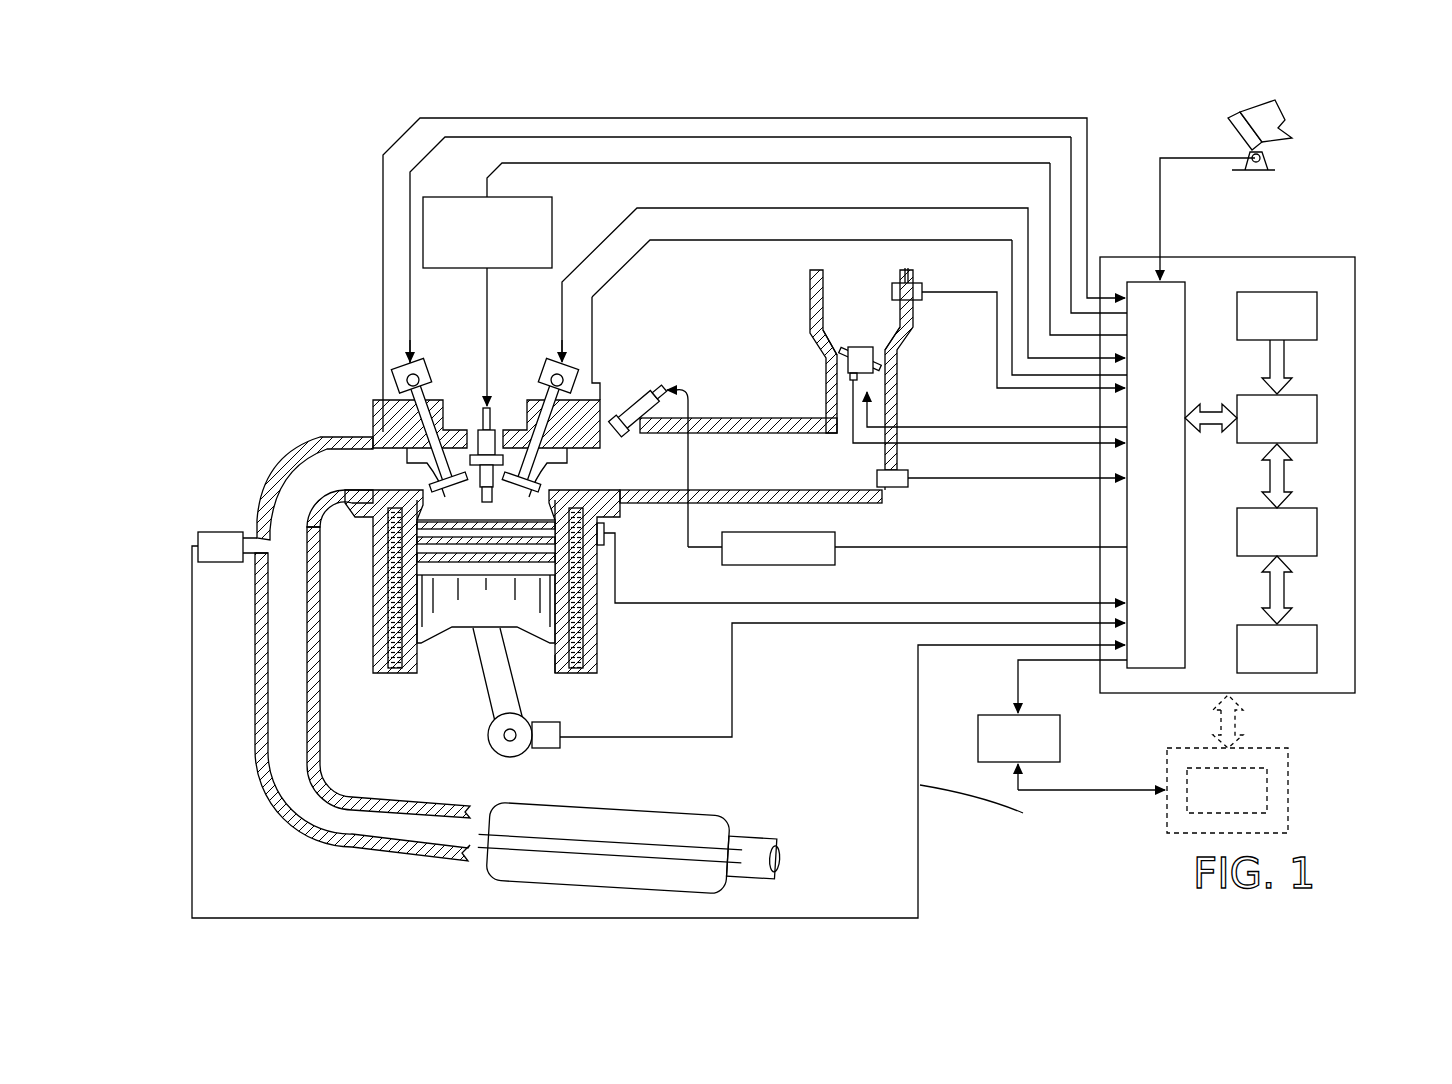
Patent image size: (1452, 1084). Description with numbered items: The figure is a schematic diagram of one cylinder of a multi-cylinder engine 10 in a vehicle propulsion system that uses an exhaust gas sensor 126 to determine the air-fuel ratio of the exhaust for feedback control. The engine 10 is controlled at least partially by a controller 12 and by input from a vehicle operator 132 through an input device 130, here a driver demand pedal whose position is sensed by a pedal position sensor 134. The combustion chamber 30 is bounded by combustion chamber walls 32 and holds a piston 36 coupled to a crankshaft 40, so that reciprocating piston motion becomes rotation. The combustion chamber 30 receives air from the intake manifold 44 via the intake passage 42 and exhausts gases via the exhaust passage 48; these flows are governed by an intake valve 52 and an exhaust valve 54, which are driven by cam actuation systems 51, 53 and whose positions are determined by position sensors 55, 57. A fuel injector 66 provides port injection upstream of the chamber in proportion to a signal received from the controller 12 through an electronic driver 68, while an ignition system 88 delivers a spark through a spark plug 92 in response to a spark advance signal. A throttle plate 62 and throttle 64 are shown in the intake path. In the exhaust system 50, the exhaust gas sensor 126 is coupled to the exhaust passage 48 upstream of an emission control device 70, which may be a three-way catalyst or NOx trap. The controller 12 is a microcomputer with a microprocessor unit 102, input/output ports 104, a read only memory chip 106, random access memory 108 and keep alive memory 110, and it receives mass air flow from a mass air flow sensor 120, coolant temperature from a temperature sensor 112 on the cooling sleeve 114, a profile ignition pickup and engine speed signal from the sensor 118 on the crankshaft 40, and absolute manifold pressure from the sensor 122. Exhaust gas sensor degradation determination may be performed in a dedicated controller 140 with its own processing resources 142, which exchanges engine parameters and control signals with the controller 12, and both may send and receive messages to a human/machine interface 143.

The engine 10 is at (300, 348).
The controller 12 is at (1355, 262).
The combustion chamber 30 is at (392, 612).
The combustion chamber walls 32 is at (422, 663).
The piston 36 is at (490, 612).
The crankshaft 40 is at (495, 758).
The intake passage 42 is at (869, 320).
The intake manifold 44 is at (797, 474).
The exhaust passage 48 is at (350, 482).
The exhaust system 50 is at (237, 465).
The cam actuation system 51 is at (548, 370).
The intake valve 52 is at (540, 481).
The cam actuation system 53 is at (430, 364).
The exhaust valve 54 is at (437, 485).
The position sensor 55 is at (572, 385).
The position sensor 57 is at (405, 377).
The throttle plate 62 is at (880, 356).
The throttle 64 is at (828, 355).
The fuel injector 66 is at (640, 395).
The electronic driver 68 is at (750, 565).
The emission control device 70 is at (695, 812).
The ignition system 88 is at (428, 197).
The spark plug 92 is at (490, 425).
The microprocessor unit 102 is at (1317, 418).
The input/output ports 104 is at (1185, 292).
The read only memory chip 106 is at (1317, 312).
The random access memory 108 is at (1317, 530).
The keep alive memory 110 is at (1317, 645).
The temperature sensor 112 is at (606, 535).
The cooling sleeve 114 is at (600, 640).
The sensor 118 is at (545, 752).
The mass air flow sensor 120 is at (920, 284).
The sensor 122 is at (903, 487).
The exhaust gas sensor 126 is at (198, 537).
The input device 130 is at (1228, 128).
The vehicle operator 132 is at (1290, 120).
The pedal position sensor 134 is at (1272, 162).
The dedicated controller 140 is at (1288, 770).
The processing resources 142 is at (1267, 800).
The human/machine interface 143 is at (1071, 725).